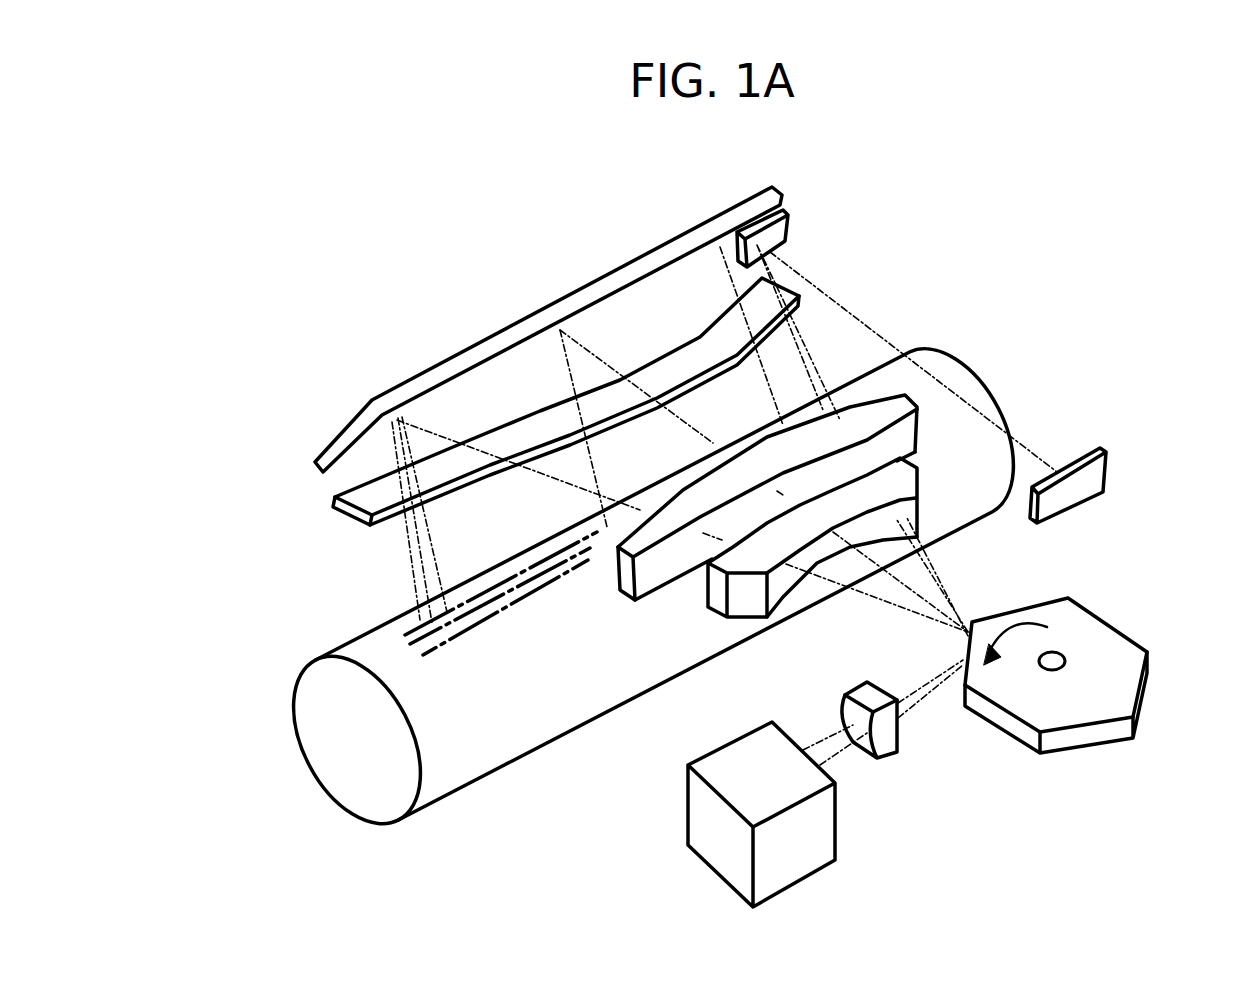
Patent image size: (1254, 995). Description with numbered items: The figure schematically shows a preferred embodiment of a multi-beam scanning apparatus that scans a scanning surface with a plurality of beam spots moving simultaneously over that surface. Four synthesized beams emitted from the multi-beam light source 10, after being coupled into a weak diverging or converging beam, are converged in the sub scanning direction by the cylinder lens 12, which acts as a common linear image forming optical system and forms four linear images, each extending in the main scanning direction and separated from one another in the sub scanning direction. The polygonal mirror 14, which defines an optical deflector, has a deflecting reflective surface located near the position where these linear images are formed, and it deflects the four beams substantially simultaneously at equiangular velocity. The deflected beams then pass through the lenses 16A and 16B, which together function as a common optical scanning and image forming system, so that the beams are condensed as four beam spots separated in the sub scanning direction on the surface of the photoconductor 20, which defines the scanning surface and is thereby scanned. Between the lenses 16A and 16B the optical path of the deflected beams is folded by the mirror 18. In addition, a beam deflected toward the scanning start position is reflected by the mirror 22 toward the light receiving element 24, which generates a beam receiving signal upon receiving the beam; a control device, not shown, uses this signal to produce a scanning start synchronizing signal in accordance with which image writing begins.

The multi-beam light source 10 is at (823, 822).
The cylinder lens 12 is at (887, 732).
The polygonal mirror 14 is at (1107, 635).
The lens 16A is at (660, 567).
The lens 16B is at (362, 503).
The mirror 18 is at (480, 348).
The photoconductor 20 is at (312, 703).
The mirror 22 is at (788, 225).
The light receiving element 24 is at (1097, 470).